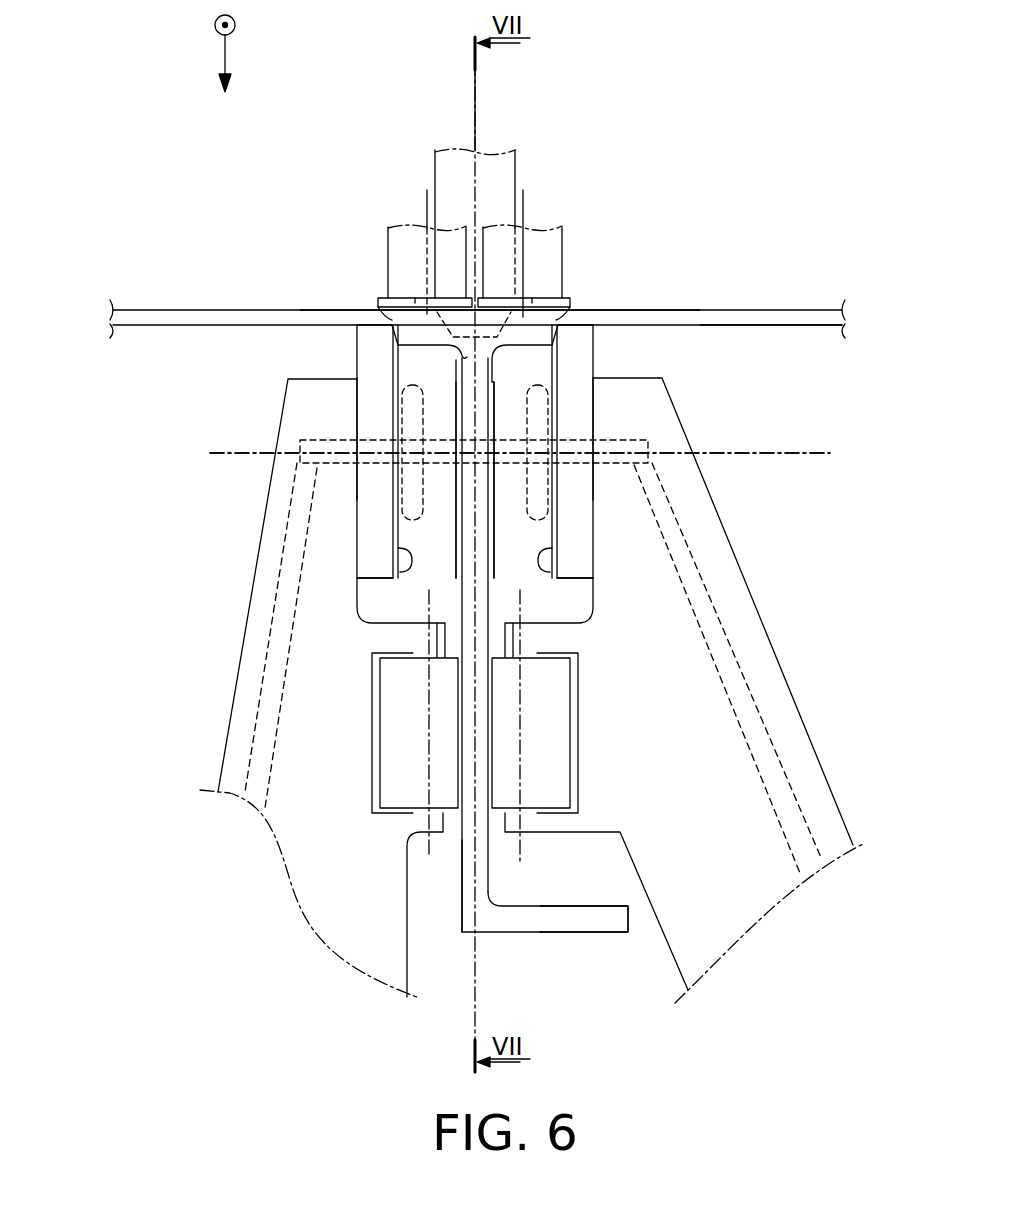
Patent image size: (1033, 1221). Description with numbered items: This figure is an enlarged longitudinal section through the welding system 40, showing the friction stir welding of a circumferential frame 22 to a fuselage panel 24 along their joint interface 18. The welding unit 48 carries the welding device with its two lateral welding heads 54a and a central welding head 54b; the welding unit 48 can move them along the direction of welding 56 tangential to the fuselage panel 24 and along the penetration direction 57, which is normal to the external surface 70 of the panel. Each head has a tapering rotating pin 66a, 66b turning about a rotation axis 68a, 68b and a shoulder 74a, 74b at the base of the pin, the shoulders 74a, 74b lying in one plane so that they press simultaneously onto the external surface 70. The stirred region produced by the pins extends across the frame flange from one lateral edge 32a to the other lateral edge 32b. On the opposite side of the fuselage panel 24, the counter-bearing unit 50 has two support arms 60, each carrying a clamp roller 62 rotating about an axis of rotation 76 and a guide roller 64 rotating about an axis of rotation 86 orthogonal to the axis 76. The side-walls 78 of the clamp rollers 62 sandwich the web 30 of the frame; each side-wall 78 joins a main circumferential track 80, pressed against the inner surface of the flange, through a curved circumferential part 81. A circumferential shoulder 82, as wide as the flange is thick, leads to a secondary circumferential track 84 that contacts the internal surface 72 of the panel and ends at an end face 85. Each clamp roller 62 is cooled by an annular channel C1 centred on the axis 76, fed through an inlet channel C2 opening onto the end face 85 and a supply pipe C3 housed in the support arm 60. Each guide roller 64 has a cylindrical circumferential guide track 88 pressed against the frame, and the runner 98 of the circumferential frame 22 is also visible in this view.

The joint interface 18 is at (458, 360).
The circumferential frame 22 is at (545, 940).
The fuselage panel 24 is at (817, 305).
The web 30 is at (480, 862).
The lateral edge 32a is at (395, 332).
The lateral edge 32b is at (557, 345).
The mounting assembly 40 is at (730, 79).
The welding unit 48 is at (600, 203).
The counter-bearing unit 50 is at (753, 548).
The lateral welding head 54a is at (388, 237).
The central welding head 54b is at (435, 150).
The direction of welding 56 is at (237, 26).
The penetration direction 57 is at (226, 50).
The support arm 60 is at (300, 672).
The clamp roller 62 is at (349, 515).
The guide roller 64 is at (372, 792).
The rotating pin 66a is at (385, 318).
The rotating pin 66b is at (553, 362).
The rotation axis 68a is at (427, 190).
The rotation axis 68b is at (473, 85).
The external surface 70 is at (783, 308).
The internal surface 72 is at (822, 328).
The shoulder 74a is at (392, 312).
The shoulder 74b is at (440, 358).
The axis of rotation 76 is at (728, 453).
The side-wall 78 is at (468, 560).
The main circumferential track 80 is at (400, 583).
The curved circumferential part 81 is at (485, 357).
The circumferential shoulder 82 is at (405, 550).
The secondary circumferential track 84 is at (357, 605).
The end face 85 is at (357, 490).
The axis of rotation 86 is at (428, 860).
The circumferential guide track 88 is at (397, 762).
The runner 98 is at (587, 920).
The annular channel C1 is at (540, 495).
The inlet channel C2 is at (632, 447).
The supply pipe C3 is at (730, 665).